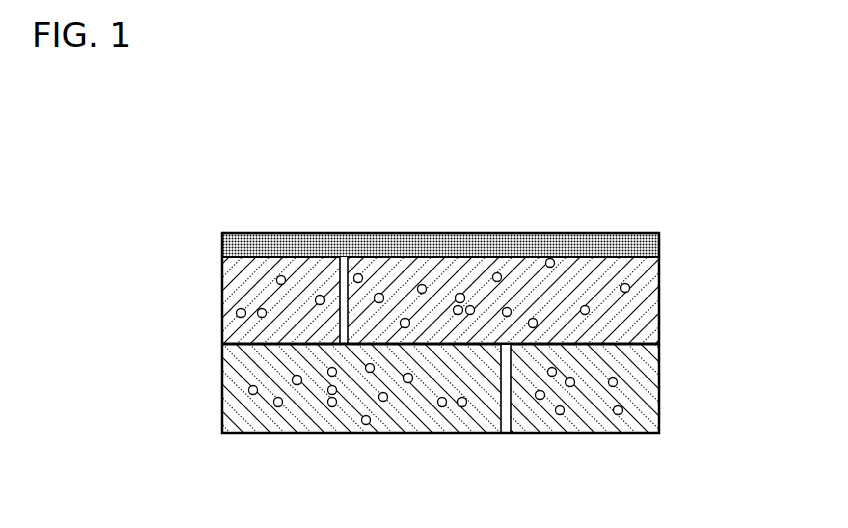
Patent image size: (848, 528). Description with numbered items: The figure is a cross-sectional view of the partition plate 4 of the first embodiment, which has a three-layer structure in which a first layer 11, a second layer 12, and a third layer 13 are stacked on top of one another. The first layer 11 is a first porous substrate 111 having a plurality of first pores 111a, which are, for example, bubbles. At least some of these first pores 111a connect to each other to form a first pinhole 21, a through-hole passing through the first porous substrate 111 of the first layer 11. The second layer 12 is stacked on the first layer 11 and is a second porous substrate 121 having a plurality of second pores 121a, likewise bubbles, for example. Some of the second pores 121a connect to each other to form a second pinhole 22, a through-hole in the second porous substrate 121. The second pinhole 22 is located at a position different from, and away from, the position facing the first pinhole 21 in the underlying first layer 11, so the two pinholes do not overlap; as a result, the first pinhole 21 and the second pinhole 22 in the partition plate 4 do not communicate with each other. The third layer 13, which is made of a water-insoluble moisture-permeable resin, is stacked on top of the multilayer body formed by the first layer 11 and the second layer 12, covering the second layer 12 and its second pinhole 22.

The partition plate 4 is at (452, 345).
The first layer 11 is at (424, 428).
The first porous substrate 111 is at (222, 372).
The first pores 111a is at (250, 392).
The second layer 12 is at (424, 261).
The second porous substrate 121 is at (222, 283).
The second pores 121a is at (237, 315).
The third layer 13 is at (648, 247).
The first pinhole 21 is at (505, 434).
The second pinhole 22 is at (344, 257).